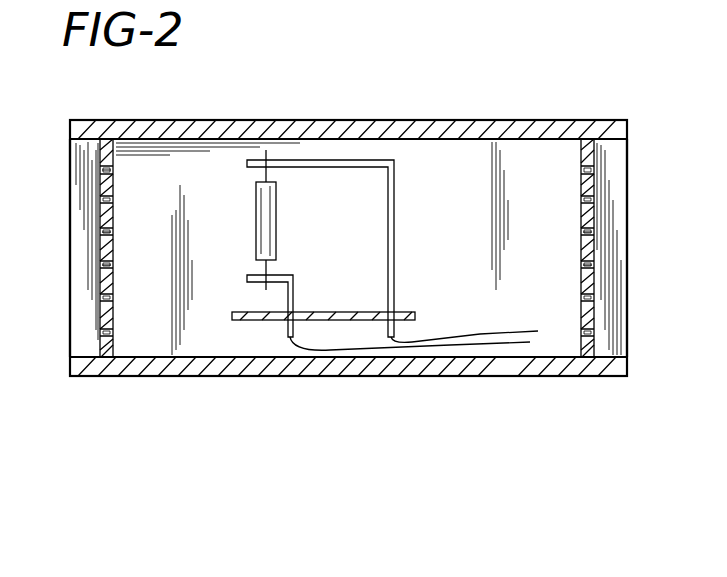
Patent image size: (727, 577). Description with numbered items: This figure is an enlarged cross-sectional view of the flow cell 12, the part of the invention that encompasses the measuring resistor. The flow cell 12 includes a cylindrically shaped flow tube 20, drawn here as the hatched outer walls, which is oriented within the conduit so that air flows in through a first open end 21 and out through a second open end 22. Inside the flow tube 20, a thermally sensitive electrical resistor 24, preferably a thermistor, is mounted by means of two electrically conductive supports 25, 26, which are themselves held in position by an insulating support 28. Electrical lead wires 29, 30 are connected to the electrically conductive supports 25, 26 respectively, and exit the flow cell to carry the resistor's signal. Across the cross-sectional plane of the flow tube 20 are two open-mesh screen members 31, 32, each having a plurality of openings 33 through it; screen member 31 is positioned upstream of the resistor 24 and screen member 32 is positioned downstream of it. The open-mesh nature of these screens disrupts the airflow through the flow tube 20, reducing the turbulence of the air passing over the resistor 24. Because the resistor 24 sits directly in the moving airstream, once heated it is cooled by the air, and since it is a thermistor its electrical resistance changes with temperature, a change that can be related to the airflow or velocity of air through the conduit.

The flow cell 12 is at (337, 108).
The flow tube 20 is at (530, 120).
The first open end 21 is at (627, 185).
The second open end 22 is at (69, 187).
The thermally sensitive electrical resistor 24 is at (276, 216).
The electrically conductive support 25 is at (288, 326).
The electrically conductive support 26 is at (395, 208).
The insulating support 28 is at (400, 312).
The electrical lead wire 29 is at (508, 345).
The electrical lead wire 30 is at (510, 322).
The screen member 31 is at (594, 303).
The screen member 32 is at (100, 312).
The openings 33 is at (100, 233).